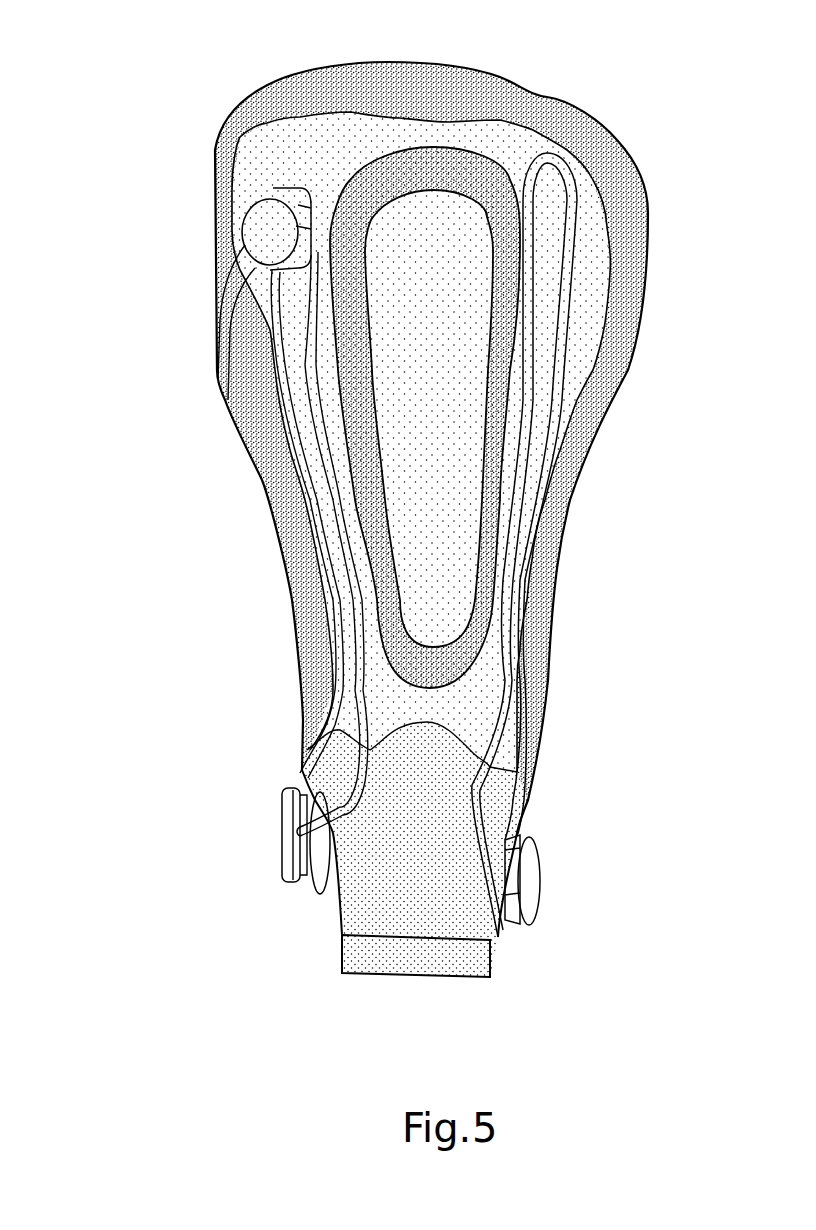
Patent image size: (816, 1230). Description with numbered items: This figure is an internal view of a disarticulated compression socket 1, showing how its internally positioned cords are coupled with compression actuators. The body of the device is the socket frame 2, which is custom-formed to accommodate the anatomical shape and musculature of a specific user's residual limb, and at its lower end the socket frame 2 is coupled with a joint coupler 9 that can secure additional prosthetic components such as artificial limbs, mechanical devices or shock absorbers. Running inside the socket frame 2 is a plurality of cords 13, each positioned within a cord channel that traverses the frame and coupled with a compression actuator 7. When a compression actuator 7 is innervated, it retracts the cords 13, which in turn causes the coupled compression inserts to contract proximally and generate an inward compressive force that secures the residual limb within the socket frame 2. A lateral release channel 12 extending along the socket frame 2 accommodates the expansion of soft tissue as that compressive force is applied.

The disarticulated compression socket 1 is at (660, 112).
The socket frame 2 is at (297, 113).
The compression actuator 7 is at (255, 228).
The joint coupler 9 is at (425, 977).
The lateral release channel 12 is at (440, 355).
The cord 13 is at (315, 362).